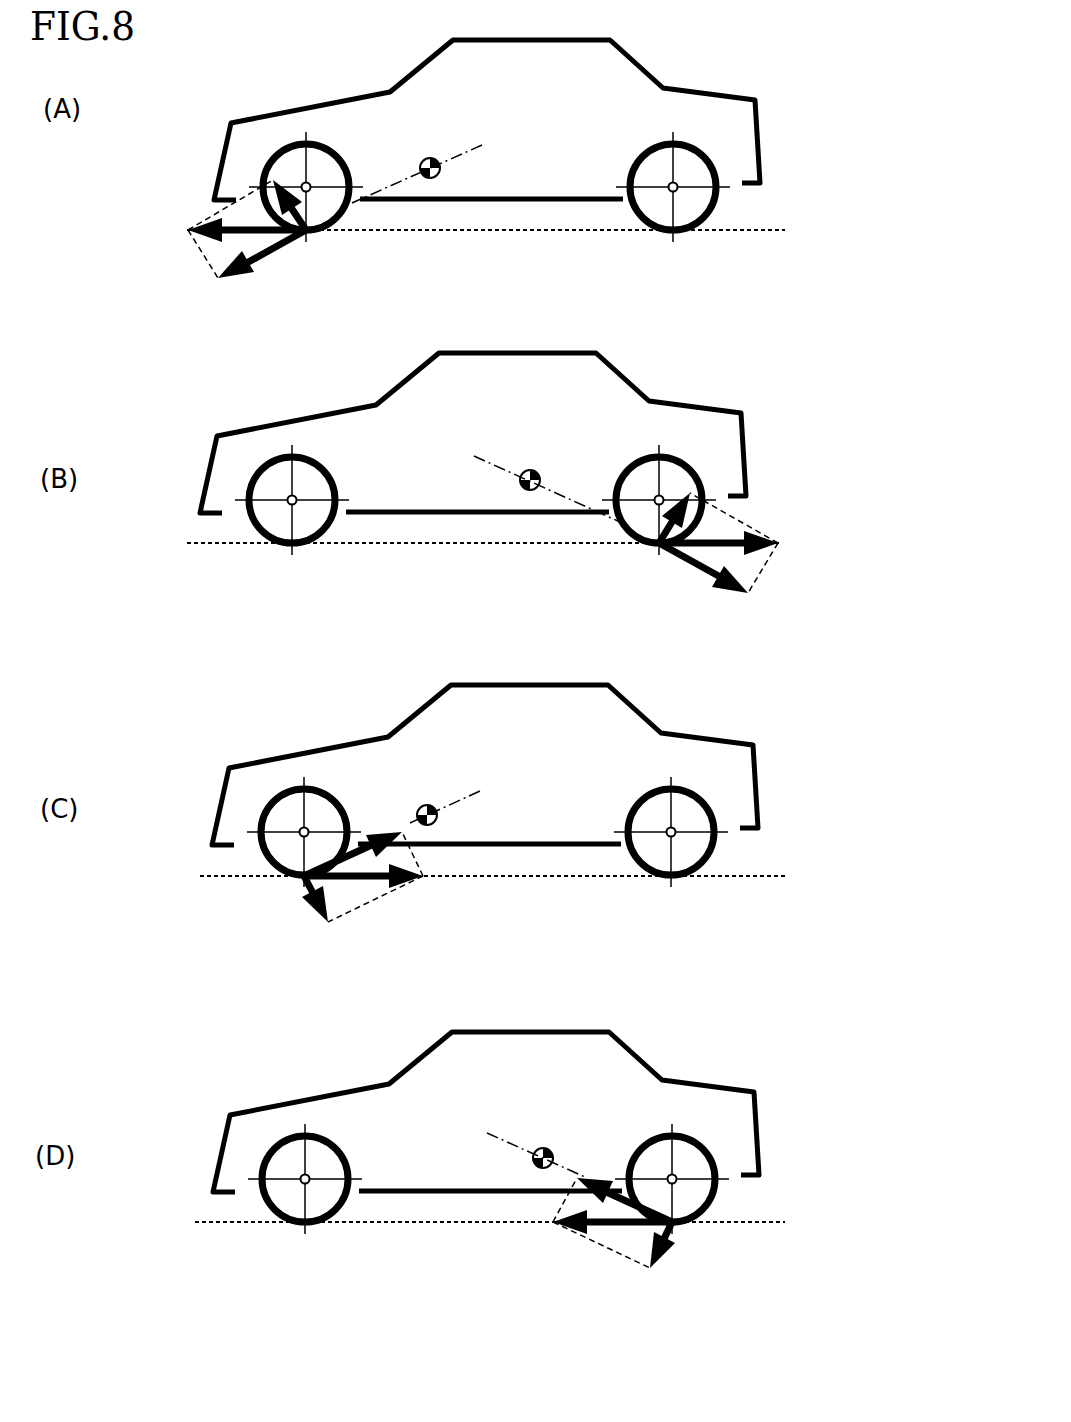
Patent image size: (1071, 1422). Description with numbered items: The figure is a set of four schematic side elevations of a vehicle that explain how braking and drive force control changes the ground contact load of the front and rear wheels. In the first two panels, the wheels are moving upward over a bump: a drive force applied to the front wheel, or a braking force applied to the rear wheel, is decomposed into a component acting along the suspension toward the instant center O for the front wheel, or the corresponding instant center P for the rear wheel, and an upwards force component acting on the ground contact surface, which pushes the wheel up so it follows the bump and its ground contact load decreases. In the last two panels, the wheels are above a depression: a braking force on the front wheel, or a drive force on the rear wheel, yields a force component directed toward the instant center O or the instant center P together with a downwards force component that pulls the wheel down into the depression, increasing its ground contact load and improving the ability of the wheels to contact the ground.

The instant center O is at (417, 476).
The instant center P is at (547, 810).